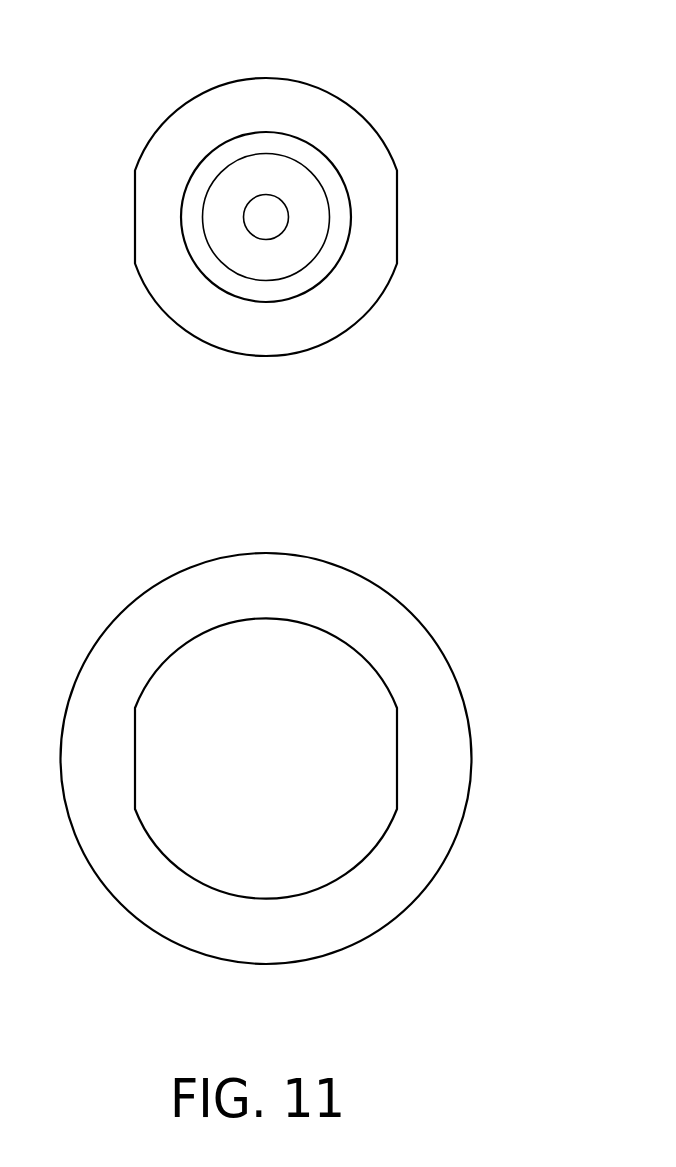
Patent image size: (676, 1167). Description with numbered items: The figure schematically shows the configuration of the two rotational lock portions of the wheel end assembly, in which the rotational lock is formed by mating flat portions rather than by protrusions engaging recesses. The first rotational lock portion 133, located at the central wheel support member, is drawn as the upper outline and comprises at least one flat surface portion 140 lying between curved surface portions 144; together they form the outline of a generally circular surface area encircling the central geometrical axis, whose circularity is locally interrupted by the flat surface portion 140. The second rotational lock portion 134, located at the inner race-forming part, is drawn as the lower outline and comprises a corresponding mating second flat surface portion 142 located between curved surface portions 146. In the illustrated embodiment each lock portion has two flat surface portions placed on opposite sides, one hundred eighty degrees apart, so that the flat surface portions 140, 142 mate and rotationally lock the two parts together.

The curved surface portion 144 is at (270, 77).
The flat surface portion 140 is at (398, 217).
The first rotational lock portion 133 is at (383, 298).
The curved surface portion 146 is at (280, 623).
The second flat surface portion 142 is at (397, 758).
The second rotational lock portion 134 is at (432, 887).